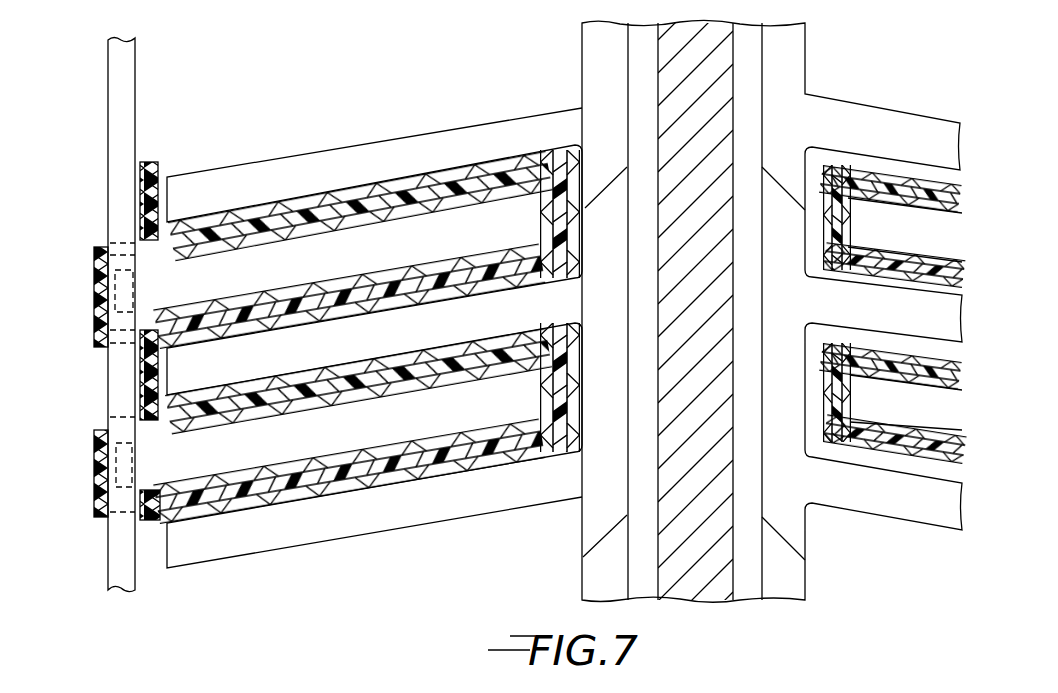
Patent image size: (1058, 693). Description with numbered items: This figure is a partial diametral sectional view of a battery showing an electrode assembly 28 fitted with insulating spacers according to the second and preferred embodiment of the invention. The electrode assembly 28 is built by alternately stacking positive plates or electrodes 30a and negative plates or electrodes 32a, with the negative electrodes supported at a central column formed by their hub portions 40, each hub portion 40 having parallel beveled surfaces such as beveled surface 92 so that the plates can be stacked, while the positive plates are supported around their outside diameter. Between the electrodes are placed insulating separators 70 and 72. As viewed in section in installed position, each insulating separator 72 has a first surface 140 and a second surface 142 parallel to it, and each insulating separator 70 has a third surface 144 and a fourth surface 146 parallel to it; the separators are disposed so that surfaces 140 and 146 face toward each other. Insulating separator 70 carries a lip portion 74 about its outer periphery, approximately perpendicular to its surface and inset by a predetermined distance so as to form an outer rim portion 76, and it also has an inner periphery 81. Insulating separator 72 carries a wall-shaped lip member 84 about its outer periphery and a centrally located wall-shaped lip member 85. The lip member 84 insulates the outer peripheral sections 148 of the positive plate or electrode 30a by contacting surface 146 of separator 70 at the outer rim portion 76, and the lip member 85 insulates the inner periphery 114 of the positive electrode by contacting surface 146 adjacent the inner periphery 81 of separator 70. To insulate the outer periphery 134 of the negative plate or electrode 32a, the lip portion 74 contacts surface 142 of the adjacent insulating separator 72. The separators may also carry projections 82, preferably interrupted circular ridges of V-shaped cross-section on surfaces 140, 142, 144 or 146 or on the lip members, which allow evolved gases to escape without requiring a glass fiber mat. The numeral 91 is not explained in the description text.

The electrode assembly 28 is at (295, 106).
The positive plate or electrode 30a is at (183, 192).
The negative plate or electrode 32a is at (150, 390).
The hub portion 40 is at (600, 118).
The insulating separator 70 is at (240, 237).
The insulating separator 72 is at (254, 310).
The lip portion 74 is at (143, 200).
The outer rim portion 76 is at (103, 245).
The inner periphery 81 is at (563, 166).
The projections 82 is at (298, 222).
The wall-shaped lip member 84 is at (105, 505).
The wall-shaped lip member 85 is at (580, 460).
The bore 91 is at (600, 190).
The beveled surface 92 is at (605, 348).
The inner periphery 114 is at (565, 240).
The outer periphery 134 is at (150, 165).
The first surface 140 is at (345, 462).
The second surface 142 is at (345, 470).
The third surface 144 is at (400, 375).
The fourth surface 146 is at (388, 445).
The outer peripheral sections 148 is at (110, 263).